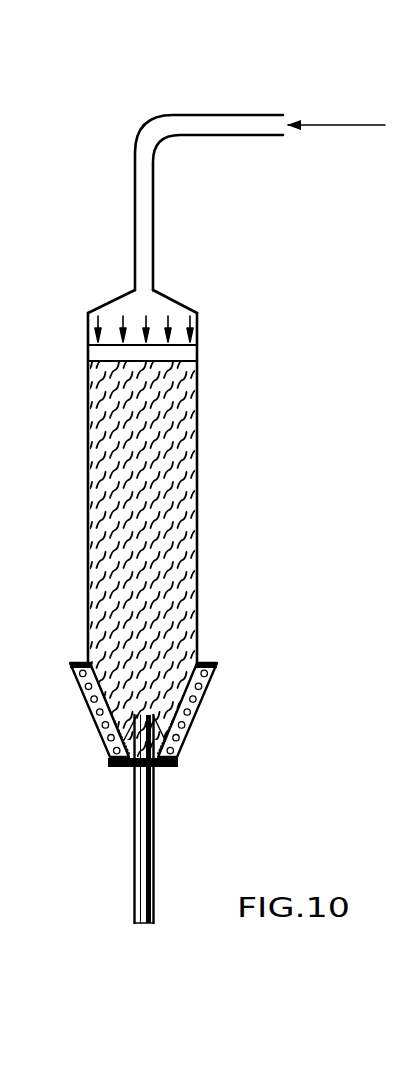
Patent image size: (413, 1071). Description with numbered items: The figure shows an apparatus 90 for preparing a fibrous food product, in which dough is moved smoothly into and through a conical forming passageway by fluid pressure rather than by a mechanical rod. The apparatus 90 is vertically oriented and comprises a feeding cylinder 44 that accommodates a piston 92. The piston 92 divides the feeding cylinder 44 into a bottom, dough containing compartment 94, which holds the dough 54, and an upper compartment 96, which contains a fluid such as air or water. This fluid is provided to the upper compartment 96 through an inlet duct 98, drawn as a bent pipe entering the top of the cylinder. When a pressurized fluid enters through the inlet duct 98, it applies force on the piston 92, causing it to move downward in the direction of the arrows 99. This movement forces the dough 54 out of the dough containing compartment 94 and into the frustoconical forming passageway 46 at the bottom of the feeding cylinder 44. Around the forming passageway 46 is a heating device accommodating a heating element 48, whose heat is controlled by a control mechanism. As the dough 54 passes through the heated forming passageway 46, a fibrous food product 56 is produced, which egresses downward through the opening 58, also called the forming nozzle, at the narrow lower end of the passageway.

The apparatus 90 is at (258, 335).
The inlet duct 98 is at (142, 168).
The upper compartment 96 is at (152, 303).
The arrows 99 is at (123, 330).
The piston 92 is at (183, 353).
The feeding cylinder 44 is at (197, 430).
The dough 54 is at (160, 495).
The dough containing compartment 94 is at (148, 545).
The forming passageway 46 is at (180, 678).
The heating element 48 is at (203, 698).
The fibrous food product 56 is at (155, 792).
The opening 58 is at (135, 790).